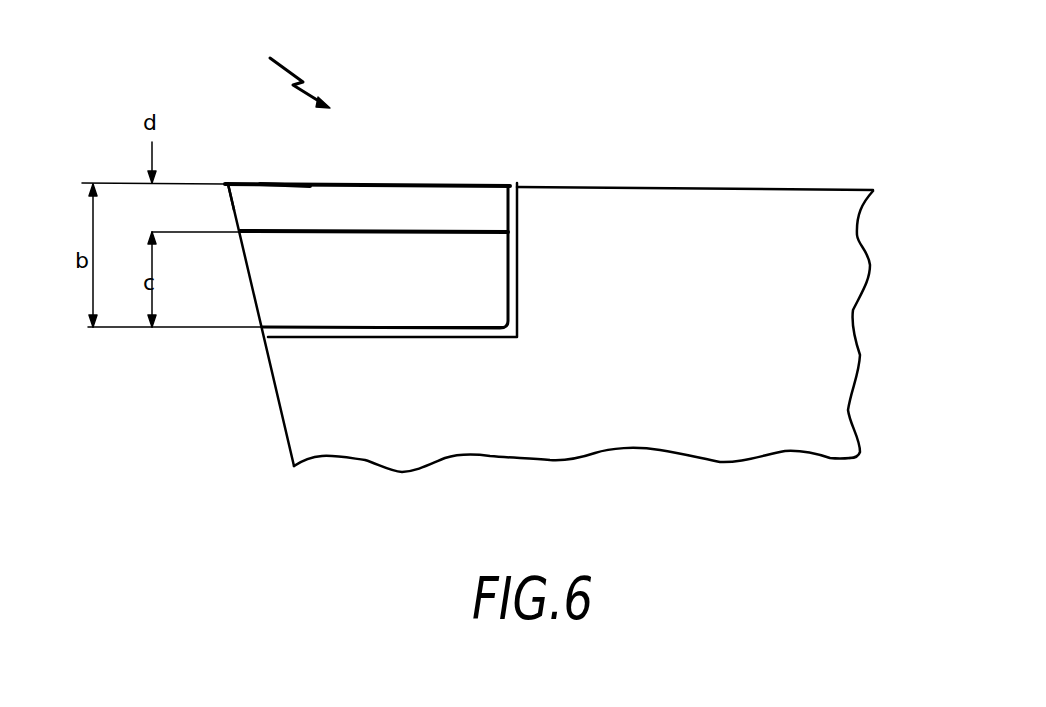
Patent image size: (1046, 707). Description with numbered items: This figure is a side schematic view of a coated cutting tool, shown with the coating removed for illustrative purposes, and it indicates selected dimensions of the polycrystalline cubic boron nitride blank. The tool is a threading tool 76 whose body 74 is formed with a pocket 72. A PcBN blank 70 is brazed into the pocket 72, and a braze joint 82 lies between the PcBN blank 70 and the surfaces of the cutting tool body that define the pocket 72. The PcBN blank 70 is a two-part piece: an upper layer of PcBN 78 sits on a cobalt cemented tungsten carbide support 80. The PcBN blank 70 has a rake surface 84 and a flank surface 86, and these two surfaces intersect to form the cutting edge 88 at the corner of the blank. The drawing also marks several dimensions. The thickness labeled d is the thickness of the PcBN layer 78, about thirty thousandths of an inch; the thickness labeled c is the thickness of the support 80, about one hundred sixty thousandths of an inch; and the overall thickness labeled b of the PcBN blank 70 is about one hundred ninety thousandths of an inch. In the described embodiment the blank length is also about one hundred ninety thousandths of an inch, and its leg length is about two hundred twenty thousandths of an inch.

The PcBN blank 70 is at (410, 185).
The pocket 72 is at (517, 248).
The body 74 is at (740, 207).
The threading tool 76 is at (296, 67).
The layer of PcBN 78 is at (462, 210).
The cobalt cemented tungsten carbide support 80 is at (405, 310).
The braze joint 82 is at (517, 305).
The rake surface 84 is at (372, 185).
The flank surface 86 is at (303, 208).
The cutting edge 88 is at (227, 212).